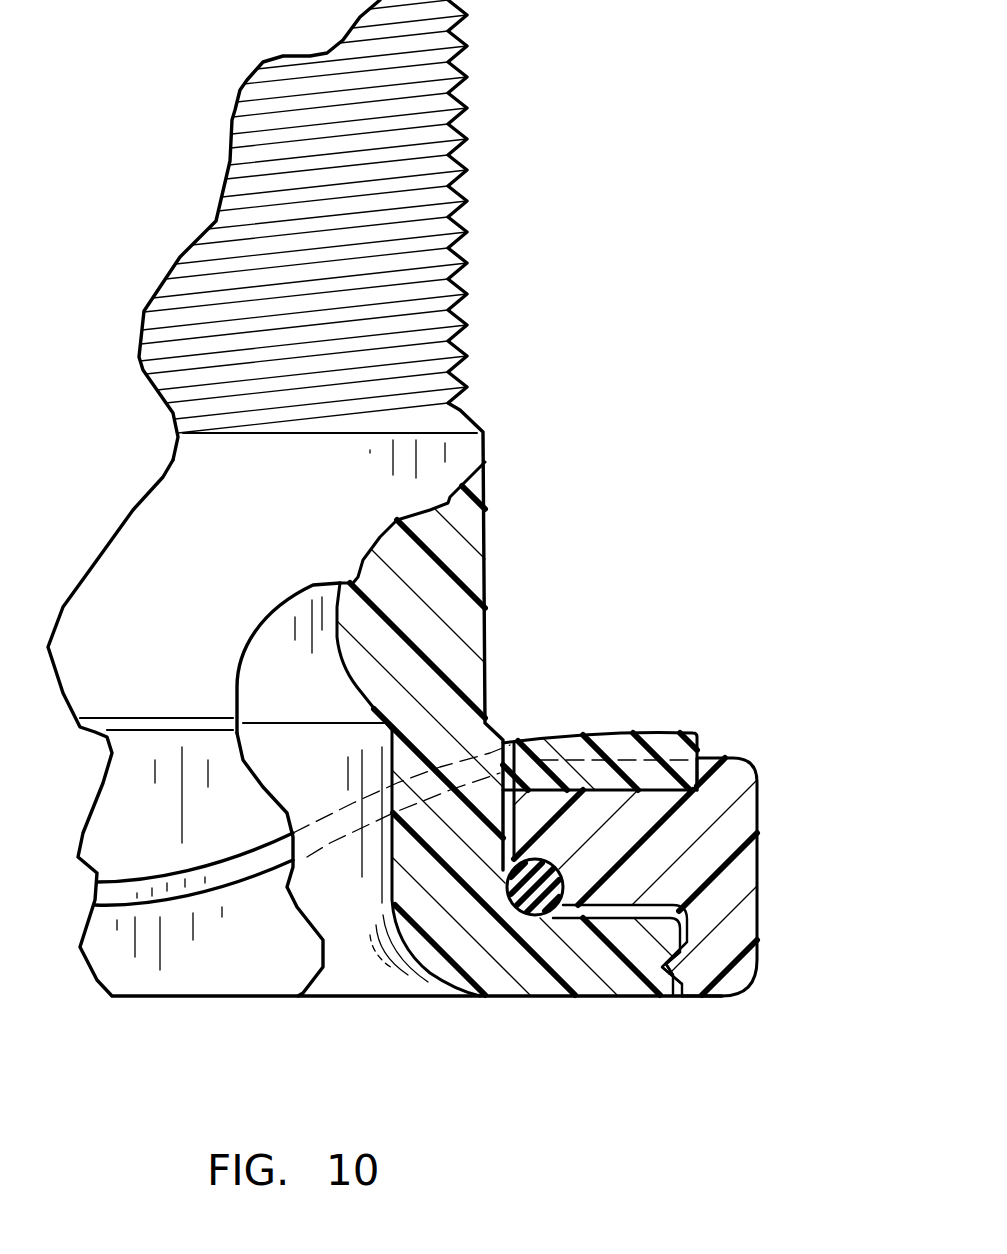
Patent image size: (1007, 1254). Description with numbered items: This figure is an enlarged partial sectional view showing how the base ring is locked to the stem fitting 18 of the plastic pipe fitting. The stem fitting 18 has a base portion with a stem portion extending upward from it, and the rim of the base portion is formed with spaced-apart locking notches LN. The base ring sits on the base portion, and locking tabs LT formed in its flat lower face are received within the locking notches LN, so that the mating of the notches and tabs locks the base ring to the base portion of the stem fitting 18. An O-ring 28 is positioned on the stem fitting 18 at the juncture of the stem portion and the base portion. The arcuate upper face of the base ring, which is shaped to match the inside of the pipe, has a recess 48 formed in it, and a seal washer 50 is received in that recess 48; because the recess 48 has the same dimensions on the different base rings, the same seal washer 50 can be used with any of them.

The stem fitting 18 is at (537, 431).
The O-ring 28 is at (530, 902).
The recess 48 is at (670, 790).
The seal washer 50 is at (642, 732).
The locking notches LN is at (680, 953).
The locking tabs LT is at (677, 963).